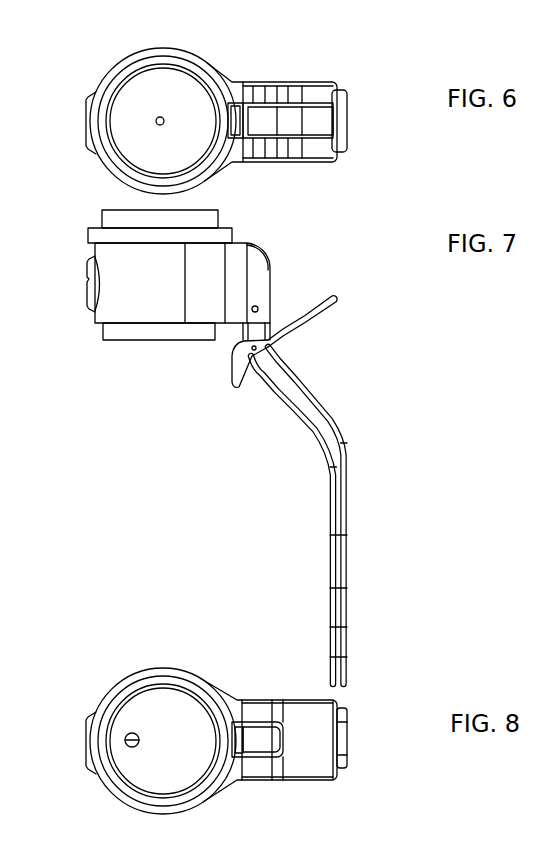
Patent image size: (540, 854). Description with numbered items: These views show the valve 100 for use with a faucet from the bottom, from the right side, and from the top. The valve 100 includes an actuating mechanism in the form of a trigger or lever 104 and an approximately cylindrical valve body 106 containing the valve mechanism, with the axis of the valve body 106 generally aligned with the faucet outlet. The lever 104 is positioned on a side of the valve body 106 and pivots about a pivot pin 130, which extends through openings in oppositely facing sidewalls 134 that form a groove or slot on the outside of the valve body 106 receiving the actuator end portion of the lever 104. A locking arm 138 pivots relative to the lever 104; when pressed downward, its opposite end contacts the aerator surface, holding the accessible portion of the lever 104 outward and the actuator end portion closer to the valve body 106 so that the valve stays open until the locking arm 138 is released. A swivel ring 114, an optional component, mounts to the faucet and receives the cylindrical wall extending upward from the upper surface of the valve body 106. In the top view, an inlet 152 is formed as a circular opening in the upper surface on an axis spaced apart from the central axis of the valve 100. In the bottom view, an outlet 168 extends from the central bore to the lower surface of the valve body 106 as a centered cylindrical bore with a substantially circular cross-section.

In FIG. 6, the valve 100 is at (236, 62).
In FIG. 7, the valve 100 is at (299, 251).
In FIG. 8, the valve 100 is at (391, 735).
In FIG. 6, the lever 104 is at (352, 123).
In FIG. 7, the lever 104 is at (354, 582).
In FIG. 6, the valve body 106 is at (113, 160).
In FIG. 7, the valve body 106 is at (105, 310).
In FIG. 7, the swivel ring 114 is at (229, 212).
In FIG. 7, the pivot pin 130 is at (258, 308).
In FIG. 7, the sidewalls 134 is at (258, 262).
In FIG. 7, the locking arm 138 is at (327, 323).
In FIG. 8, the locking arm 138 is at (304, 790).
In FIG. 8, the inlet 152 is at (131, 724).
In FIG. 6, the outlet 168 is at (160, 107).